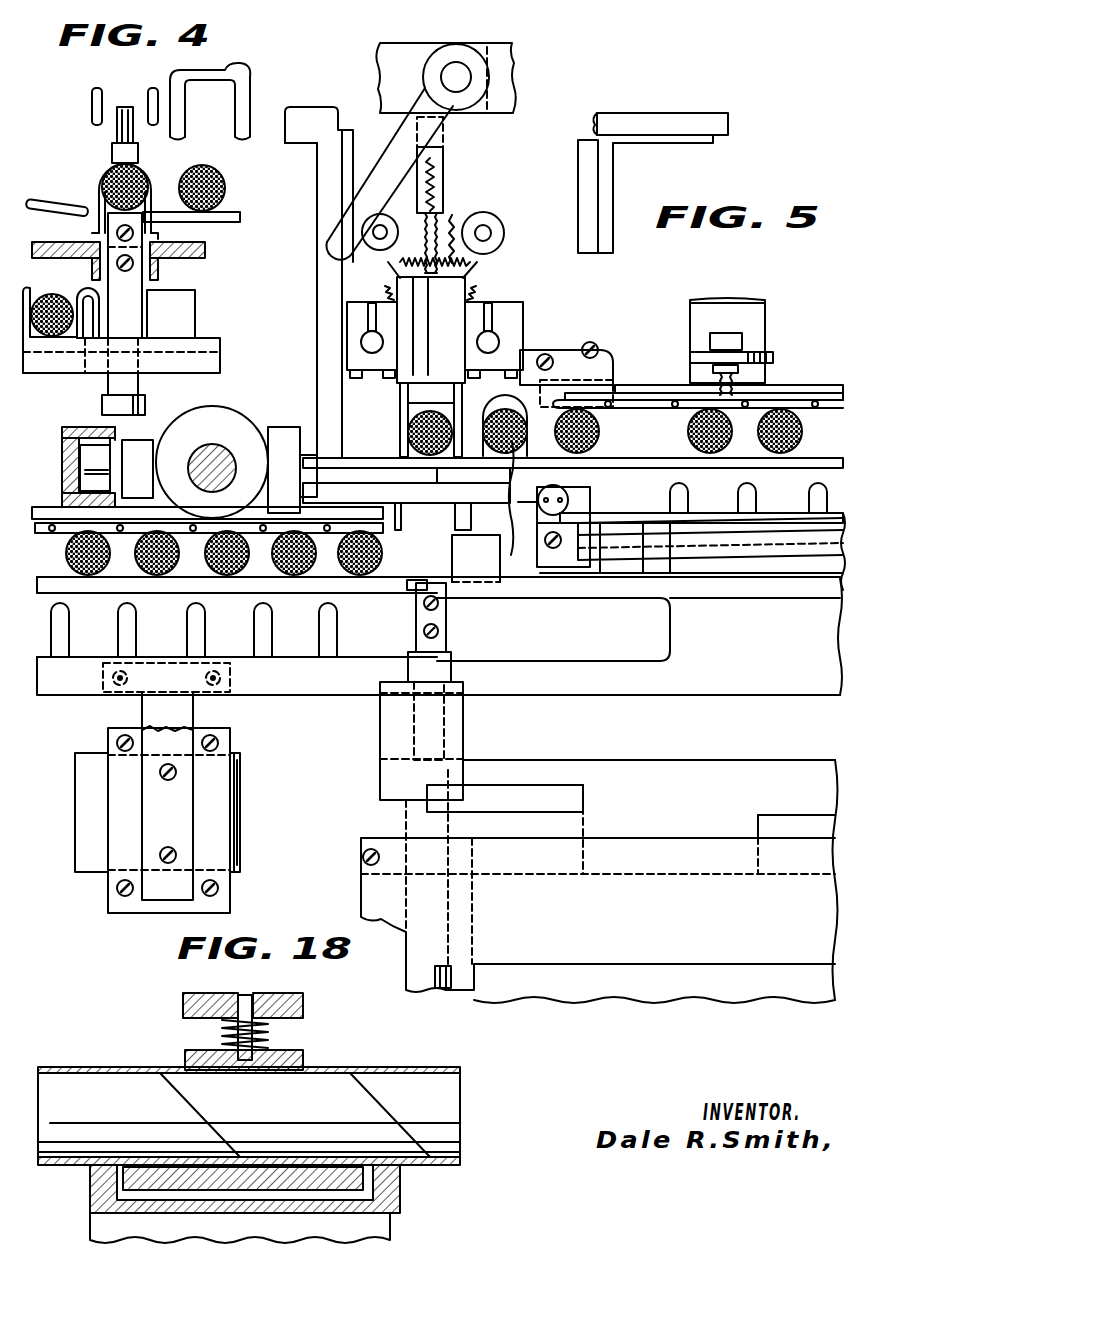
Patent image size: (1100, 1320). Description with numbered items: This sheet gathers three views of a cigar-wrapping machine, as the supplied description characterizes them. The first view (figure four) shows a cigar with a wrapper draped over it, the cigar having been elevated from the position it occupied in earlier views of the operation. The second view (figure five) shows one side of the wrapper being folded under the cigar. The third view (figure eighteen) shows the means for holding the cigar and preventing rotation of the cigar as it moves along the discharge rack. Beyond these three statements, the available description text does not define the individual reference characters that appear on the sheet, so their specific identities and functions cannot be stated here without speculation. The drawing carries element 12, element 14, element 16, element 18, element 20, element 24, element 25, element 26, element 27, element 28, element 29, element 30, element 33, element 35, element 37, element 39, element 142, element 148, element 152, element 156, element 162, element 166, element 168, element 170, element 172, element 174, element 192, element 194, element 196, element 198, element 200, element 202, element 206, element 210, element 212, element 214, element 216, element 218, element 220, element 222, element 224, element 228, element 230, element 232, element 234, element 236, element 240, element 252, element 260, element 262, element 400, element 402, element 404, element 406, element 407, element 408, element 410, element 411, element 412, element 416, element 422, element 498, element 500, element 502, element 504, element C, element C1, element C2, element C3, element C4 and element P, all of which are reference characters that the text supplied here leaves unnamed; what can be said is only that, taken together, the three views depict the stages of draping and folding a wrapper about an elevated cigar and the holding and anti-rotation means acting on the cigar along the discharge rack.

In FIG. 4, the hook strip plate 12 is at (85, 365).
In FIG. 4, the support plate 14 is at (226, 222).
In FIG. 5, the support plate 14 is at (668, 461).
In FIG. 18, the support plate 14 is at (223, 1175).
In FIG. 4, the frame bar 16 is at (206, 358).
In FIG. 5, the frame bar 16 is at (690, 628).
In FIG. 4, the base plate 18 is at (48, 358).
In FIG. 4, the hook fingers 20 is at (88, 297).
In FIG. 5, the hook fingers 24 is at (751, 488).
In FIG. 4, the rollers 25 is at (136, 541).
In FIG. 4, the stem 26 is at (150, 712).
In FIG. 4, the lower rail 27 is at (62, 535).
In FIG. 4, the bracket 28 is at (135, 903).
In FIG. 4, the base plate 29 is at (43, 507).
In FIG. 4, the box 30 is at (92, 847).
In FIG. 5, the clamp block 33 is at (585, 428).
In FIG. 18, the clamp block 33 is at (185, 1060).
In FIG. 5, the spring 35 is at (624, 386).
In FIG. 18, the spring 35 is at (220, 1032).
In FIG. 5, the plate 37 is at (797, 386).
In FIG. 18, the plate 37 is at (183, 1003).
In FIG. 5, the bolt assembly 39 is at (774, 352).
In FIG. 4, the block 142 is at (102, 405).
In FIG. 5, the block 142 is at (429, 985).
In FIG. 4, the slide block 148 is at (120, 387).
In FIG. 5, the slide block 148 is at (430, 722).
In FIG. 4, the clamp bracket 152 is at (125, 293).
In FIG. 5, the clamp bracket 152 is at (446, 640).
In FIG. 4, the bar 156 is at (147, 237).
In FIG. 5, the bar 156 is at (432, 583).
In FIG. 4, the block 162 is at (182, 307).
In FIG. 5, the block 162 is at (483, 558).
In FIG. 5, the head block 166 is at (390, 62).
In FIG. 5, the pivot boss 168 is at (462, 73).
In FIG. 5, the upright 170 is at (328, 270).
In FIG. 4, the bar 172 is at (70, 205).
In FIG. 5, the bar 172 is at (391, 450).
In FIG. 5, the edge 174 is at (365, 110).
In FIG. 5, the slot 192 is at (499, 674).
In FIG. 5, the assembly 194 is at (564, 277).
In FIG. 5, the side block 196 is at (458, 313).
In FIG. 5, the pivot 198 is at (365, 340).
In FIG. 5, the base 200 is at (350, 372).
In FIG. 5, the body 202 is at (470, 296).
In FIG. 5, the springs 206 is at (389, 292).
In FIG. 4, the pins 210 is at (155, 88).
In FIG. 5, the pins 210 is at (406, 405).
In FIG. 5, the gear hub 212 is at (504, 255).
In FIG. 5, the gear 214 is at (488, 225).
In FIG. 5, the lever end 216 is at (330, 233).
In FIG. 5, the lever 218 is at (387, 212).
In FIG. 5, the rack 220 is at (451, 244).
In FIG. 5, the screws 222 is at (588, 358).
In FIG. 4, the bracket 224 is at (239, 70).
In FIG. 5, the bracket 224 is at (615, 345).
In FIG. 4, the hook 228 is at (235, 102).
In FIG. 5, the hook 228 is at (482, 413).
In FIG. 4, the pin 230 is at (125, 107).
In FIG. 5, the pin 230 is at (443, 160).
In FIG. 4, the block 232 is at (139, 153).
In FIG. 5, the block 232 is at (437, 385).
In FIG. 5, the spring 234 is at (437, 194).
In FIG. 5, the housing 236 is at (620, 988).
In FIG. 5, the plate 240 is at (741, 979).
In FIG. 5, the plate 252 is at (641, 849).
In FIG. 5, the bracket cap 260 is at (337, 158).
In FIG. 5, the angle bracket 262 is at (590, 172).
In FIG. 4, the post 400 is at (62, 458).
In FIG. 4, the cylinder 402 is at (101, 437).
In FIG. 4, the block 404 is at (133, 469).
In FIG. 4, the ring 406 is at (218, 410).
In FIG. 4, the hub 407 is at (198, 453).
In FIG. 4, the block 408 is at (273, 428).
In FIG. 4, the link 410 is at (293, 468).
In FIG. 4, the plate 411 is at (71, 239).
In FIG. 5, the plate 411 is at (322, 489).
In FIG. 5, the leg 412 is at (470, 508).
In FIG. 5, the plate 416 is at (403, 492).
In FIG. 5, the leg 422 is at (403, 520).
In FIG. 5, the rail 498 is at (712, 548).
In FIG. 5, the rail 500 is at (630, 504).
In FIG. 5, the housing 502 is at (487, 473).
In FIG. 18, the housing 502 is at (387, 1182).
In FIG. 5, the block 504 is at (588, 492).
In FIG. 18, the block 504 is at (387, 1228).
In FIG. 4, the roller C is at (52, 297).
In FIG. 5, the roller C is at (373, 556).
In FIG. 18, the roller C is at (433, 1102).
In FIG. 4, the roller C1 is at (115, 178).
In FIG. 5, the roller C1 is at (412, 430).
In FIG. 5, the roller C2 is at (522, 553).
In FIG. 5, the roller C3 is at (583, 437).
In FIG. 5, the roller C4 is at (843, 415).
In FIG. 5, the pin P is at (563, 487).
In FIG. 18, the pin P is at (388, 1080).